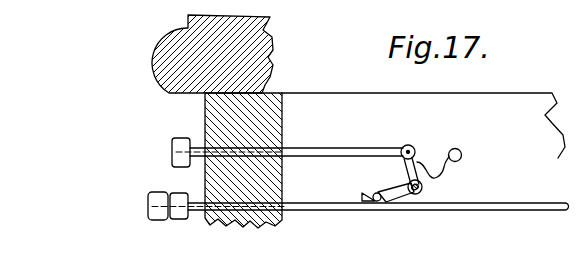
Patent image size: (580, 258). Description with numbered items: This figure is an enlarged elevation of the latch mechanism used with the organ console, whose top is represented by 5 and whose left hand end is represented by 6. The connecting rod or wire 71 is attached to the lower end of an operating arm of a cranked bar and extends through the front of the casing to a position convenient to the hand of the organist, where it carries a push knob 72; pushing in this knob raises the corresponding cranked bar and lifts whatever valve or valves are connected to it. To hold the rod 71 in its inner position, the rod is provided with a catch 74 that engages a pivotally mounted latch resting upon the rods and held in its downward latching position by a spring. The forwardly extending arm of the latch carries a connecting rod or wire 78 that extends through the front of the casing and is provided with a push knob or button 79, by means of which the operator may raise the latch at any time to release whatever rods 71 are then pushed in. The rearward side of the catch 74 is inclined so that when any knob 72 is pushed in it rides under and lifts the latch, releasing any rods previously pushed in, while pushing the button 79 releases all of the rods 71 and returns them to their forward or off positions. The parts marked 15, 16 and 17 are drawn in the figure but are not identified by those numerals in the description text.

The top of the console 5 is at (150, 68).
The left hand end of the console 6 is at (402, 92).
The pawl 15 is at (377, 193).
The link 16 is at (425, 189).
The lever with spring 17 is at (421, 165).
The connecting rod 71 is at (523, 203).
The push knob 72 is at (178, 220).
The catch 74 is at (386, 203).
The connecting rod or wire of the latch 78 is at (203, 148).
The push knob or button 79 is at (172, 156).